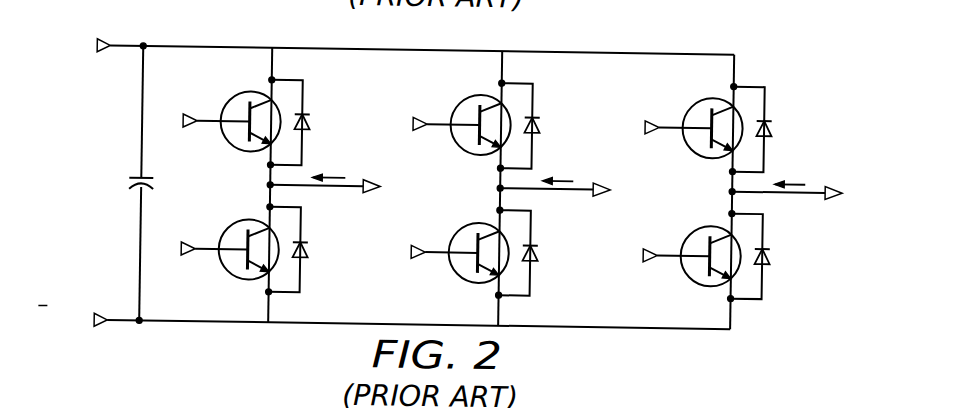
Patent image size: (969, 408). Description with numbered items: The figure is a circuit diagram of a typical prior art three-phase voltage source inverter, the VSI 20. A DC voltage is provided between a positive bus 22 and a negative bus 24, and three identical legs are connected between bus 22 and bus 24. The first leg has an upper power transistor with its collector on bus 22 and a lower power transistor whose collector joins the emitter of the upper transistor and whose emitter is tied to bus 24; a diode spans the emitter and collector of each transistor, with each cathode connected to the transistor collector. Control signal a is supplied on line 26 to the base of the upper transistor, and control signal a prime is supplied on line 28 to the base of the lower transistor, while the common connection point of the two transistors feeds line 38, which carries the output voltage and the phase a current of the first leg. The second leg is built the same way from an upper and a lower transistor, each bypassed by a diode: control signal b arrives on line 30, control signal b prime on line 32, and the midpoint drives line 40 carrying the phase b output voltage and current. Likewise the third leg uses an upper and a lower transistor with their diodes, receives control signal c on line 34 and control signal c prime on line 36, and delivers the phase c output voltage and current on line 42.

The 3φ VSI 20 is at (84, 119).
The V+ BUS 22 is at (124, 49).
The V- BUS 24 is at (124, 328).
The line 26 is at (208, 128).
The line 28 is at (206, 257).
The line 30 is at (439, 145).
The line 32 is at (435, 272).
The line 34 is at (672, 147).
The line 36 is at (667, 275).
The line 38 is at (343, 192).
The line 40 is at (568, 212).
The line 42 is at (799, 216).